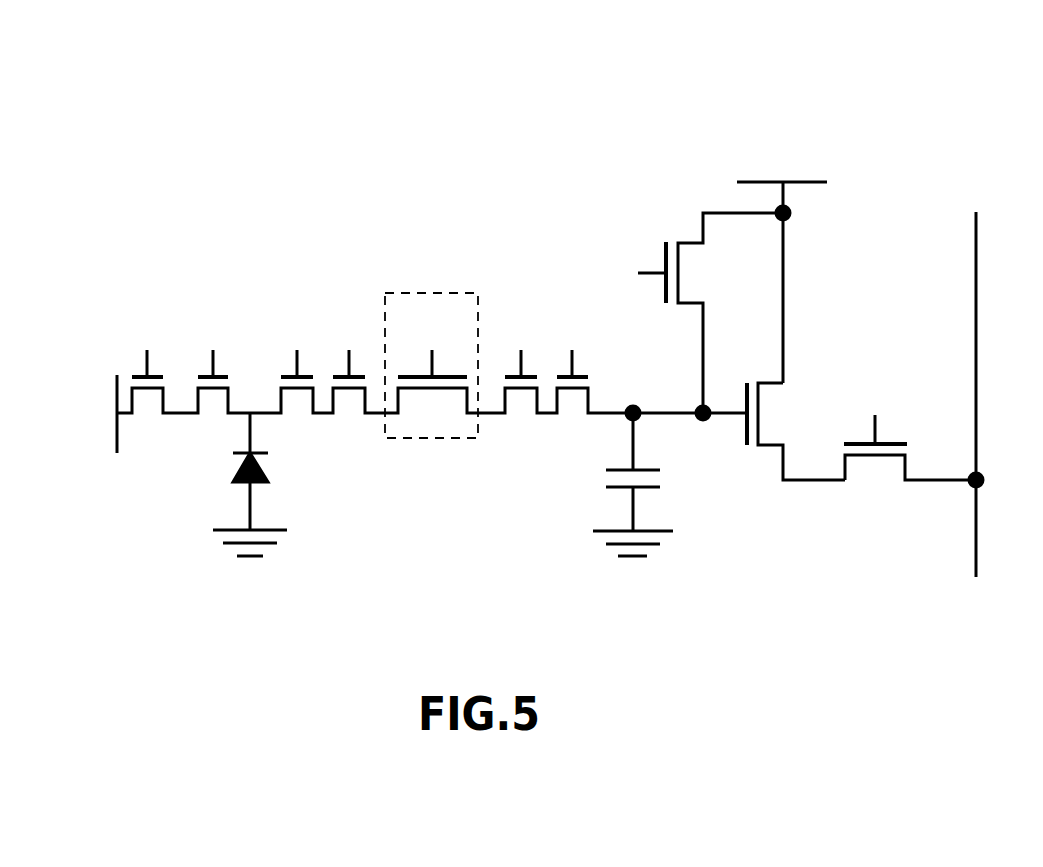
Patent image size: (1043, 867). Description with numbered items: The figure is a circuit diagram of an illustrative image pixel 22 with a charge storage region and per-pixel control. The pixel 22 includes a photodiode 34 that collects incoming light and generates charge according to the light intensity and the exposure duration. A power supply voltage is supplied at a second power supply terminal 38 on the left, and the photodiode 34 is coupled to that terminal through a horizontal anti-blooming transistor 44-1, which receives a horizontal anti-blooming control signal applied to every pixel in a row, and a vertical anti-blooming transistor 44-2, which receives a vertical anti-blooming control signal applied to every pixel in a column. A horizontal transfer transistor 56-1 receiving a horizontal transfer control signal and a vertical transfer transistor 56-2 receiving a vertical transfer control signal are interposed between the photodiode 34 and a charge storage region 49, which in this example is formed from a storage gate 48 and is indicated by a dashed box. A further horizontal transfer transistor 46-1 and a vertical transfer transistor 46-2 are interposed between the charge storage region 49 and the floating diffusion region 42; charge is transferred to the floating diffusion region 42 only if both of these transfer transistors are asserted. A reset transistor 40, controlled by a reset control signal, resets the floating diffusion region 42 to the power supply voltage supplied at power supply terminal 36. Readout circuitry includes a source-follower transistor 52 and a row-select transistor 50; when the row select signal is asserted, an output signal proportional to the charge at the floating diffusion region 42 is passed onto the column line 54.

The image pixel 22 is at (212, 175).
The photodiode 34 is at (287, 515).
The power supply terminal 36 is at (827, 162).
The second power supply terminal 38 is at (98, 438).
The reset transistor 40 is at (672, 228).
The floating diffusion region 42 is at (647, 432).
The horizontal anti-blooming transistor 44-1 is at (148, 408).
The vertical anti-blooming transistor 44-2 is at (211, 415).
The horizontal transfer transistor 46-1 is at (517, 405).
The vertical transfer transistor 46-2 is at (572, 415).
The storage gate 48 is at (415, 307).
The charge storage region 49 is at (467, 292).
The row-select transistor 50 is at (873, 482).
The source-follower transistor 52 is at (748, 380).
The column line 54 is at (977, 350).
The horizontal transfer transistor 56-1 is at (297, 410).
The vertical transfer transistor 56-2 is at (349, 412).